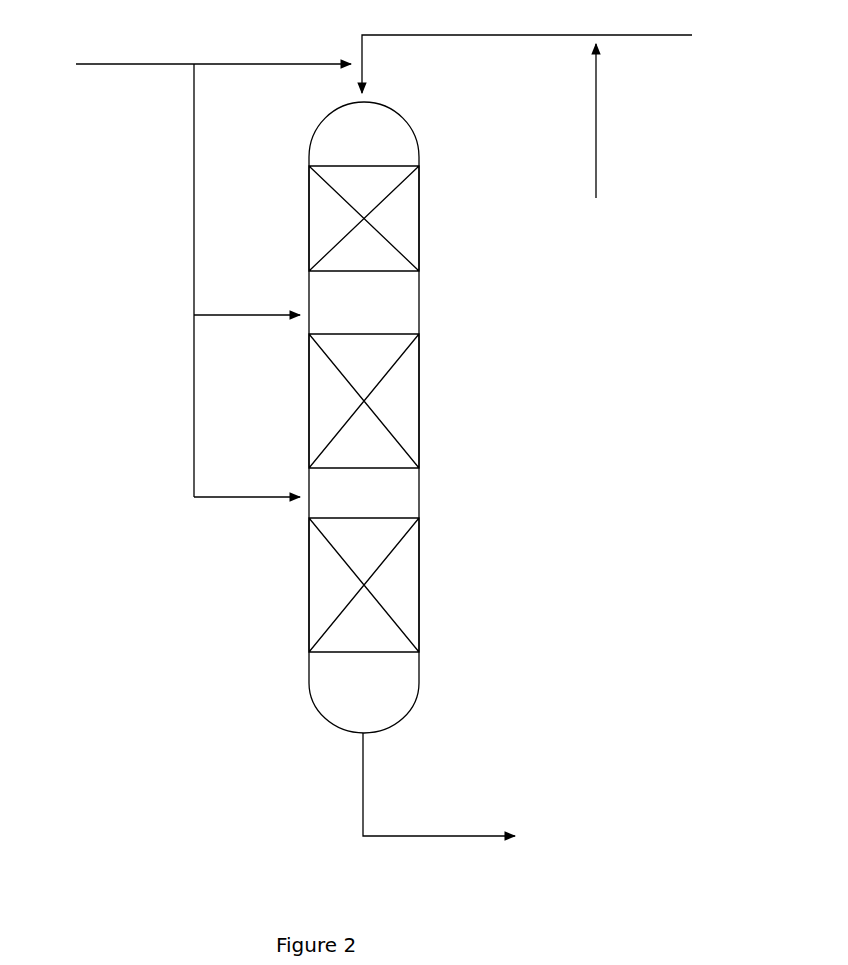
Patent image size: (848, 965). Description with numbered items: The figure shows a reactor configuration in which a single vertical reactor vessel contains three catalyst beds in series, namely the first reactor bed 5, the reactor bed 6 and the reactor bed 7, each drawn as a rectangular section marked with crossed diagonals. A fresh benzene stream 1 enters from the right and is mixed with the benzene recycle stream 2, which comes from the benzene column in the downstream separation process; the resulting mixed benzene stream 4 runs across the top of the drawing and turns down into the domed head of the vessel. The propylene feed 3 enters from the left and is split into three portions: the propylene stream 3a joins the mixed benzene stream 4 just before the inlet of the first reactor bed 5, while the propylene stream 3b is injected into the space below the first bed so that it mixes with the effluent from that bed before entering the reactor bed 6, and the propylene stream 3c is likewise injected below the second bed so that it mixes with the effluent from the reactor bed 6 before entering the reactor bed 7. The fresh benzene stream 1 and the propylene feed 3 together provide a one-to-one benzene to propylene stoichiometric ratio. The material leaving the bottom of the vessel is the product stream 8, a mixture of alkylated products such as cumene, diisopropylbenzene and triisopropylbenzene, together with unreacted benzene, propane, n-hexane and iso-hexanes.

The fresh benzene stream 1 is at (597, 177).
The benzene recycle stream 2 is at (652, 38).
The propylene feed 3 is at (99, 66).
The propylene stream 3a is at (248, 66).
The propylene stream 3b is at (252, 316).
The propylene stream 3c is at (252, 498).
The mixed benzene stream 4 is at (463, 36).
The first reactor bed 5 is at (412, 234).
The reactor bed 6 is at (401, 404).
The reactor bed 7 is at (401, 597).
The product stream 8 is at (462, 836).